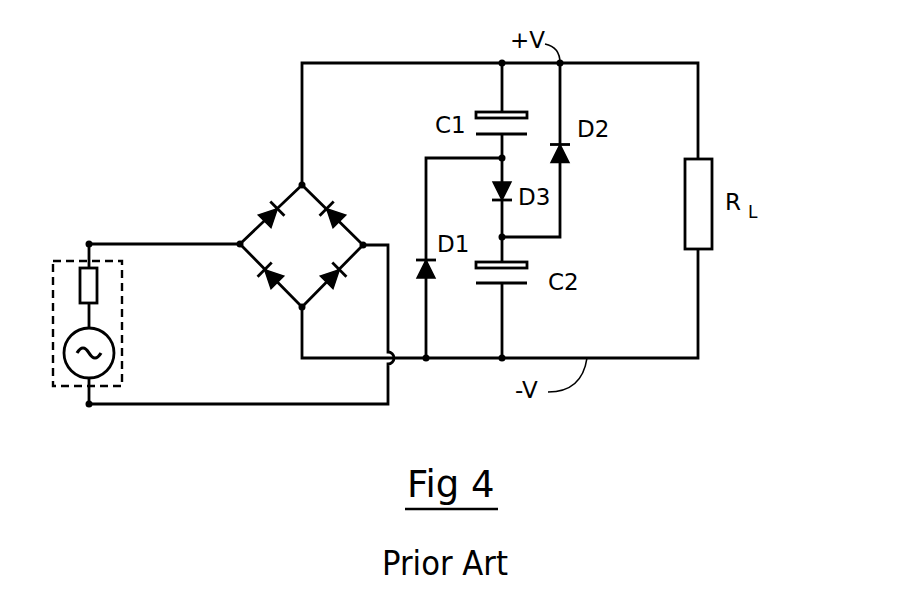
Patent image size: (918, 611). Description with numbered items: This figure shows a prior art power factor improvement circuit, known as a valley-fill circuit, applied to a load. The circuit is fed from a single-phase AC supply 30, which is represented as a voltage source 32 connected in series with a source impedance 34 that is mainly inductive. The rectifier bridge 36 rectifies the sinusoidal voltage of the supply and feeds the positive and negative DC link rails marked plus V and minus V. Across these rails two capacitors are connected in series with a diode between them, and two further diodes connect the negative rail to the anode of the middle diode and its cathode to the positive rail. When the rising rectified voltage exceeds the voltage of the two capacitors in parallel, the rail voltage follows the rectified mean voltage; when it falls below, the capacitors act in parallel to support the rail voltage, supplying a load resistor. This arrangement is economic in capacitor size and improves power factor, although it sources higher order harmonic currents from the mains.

The single-phase AC supply 30 is at (109, 324).
The voltage source 32 is at (110, 366).
The source impedance 34 is at (82, 287).
The rectifier bridge 36 is at (270, 243).